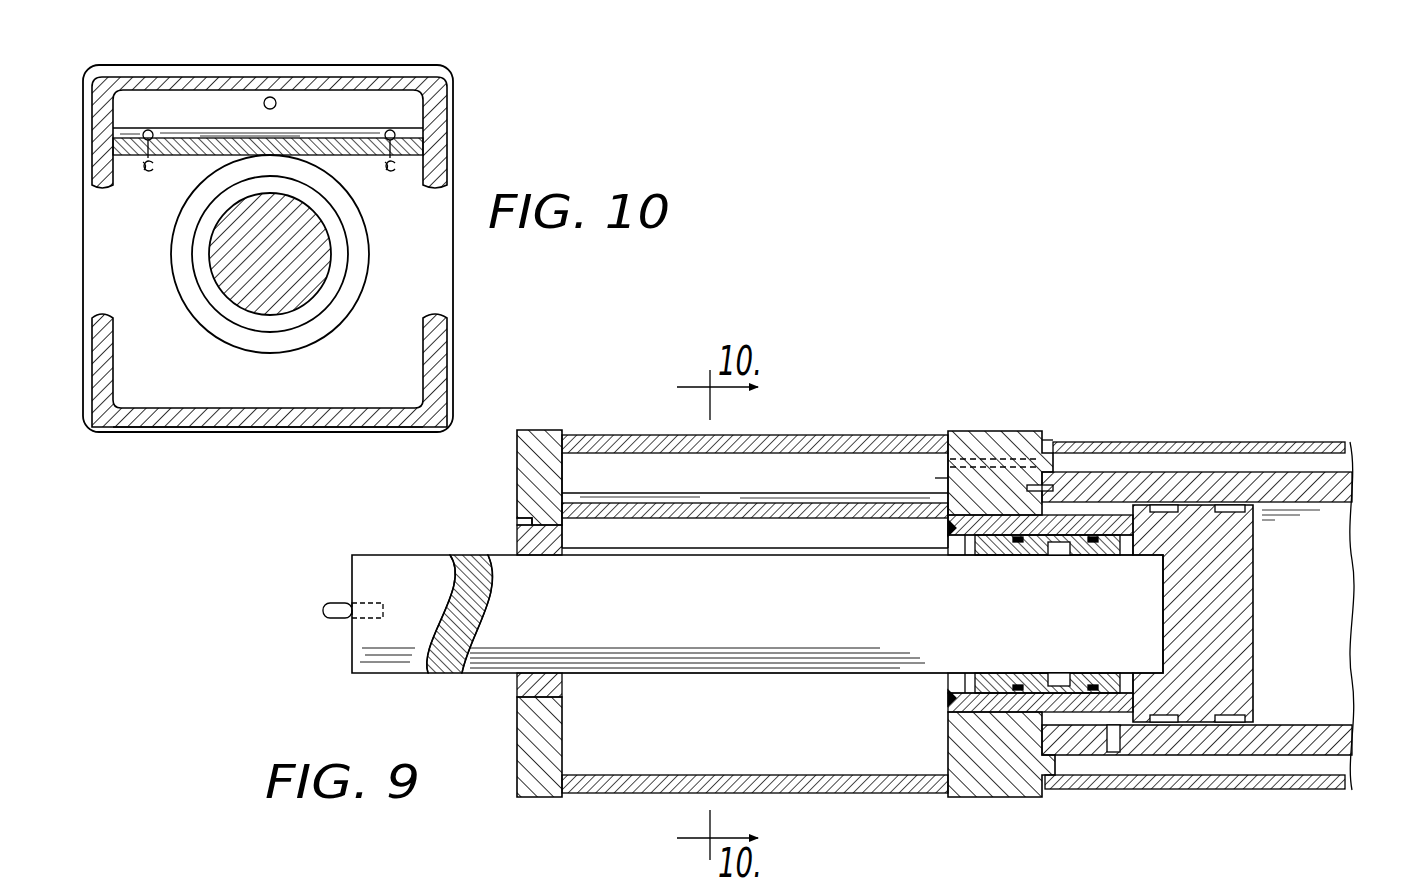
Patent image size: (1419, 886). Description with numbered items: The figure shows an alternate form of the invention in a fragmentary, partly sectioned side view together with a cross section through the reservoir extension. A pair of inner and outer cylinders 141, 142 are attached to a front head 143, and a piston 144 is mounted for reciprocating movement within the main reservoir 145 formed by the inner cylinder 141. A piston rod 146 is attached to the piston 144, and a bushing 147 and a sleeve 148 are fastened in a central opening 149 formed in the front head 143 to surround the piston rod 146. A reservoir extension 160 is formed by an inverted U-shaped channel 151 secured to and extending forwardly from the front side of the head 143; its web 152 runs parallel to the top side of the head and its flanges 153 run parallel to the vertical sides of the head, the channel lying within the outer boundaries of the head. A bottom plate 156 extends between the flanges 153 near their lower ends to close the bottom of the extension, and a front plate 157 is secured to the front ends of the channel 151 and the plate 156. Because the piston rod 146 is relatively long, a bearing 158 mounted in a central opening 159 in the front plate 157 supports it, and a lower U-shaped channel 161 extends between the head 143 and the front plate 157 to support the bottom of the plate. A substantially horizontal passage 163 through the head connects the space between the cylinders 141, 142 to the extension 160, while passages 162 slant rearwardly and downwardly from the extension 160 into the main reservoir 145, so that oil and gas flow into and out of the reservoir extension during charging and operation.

In FIG. 9, the inner cylinder 141 is at (1346, 490).
In FIG. 9, the outer cylinder 142 is at (1295, 442).
In FIG. 9, the front head 143 is at (1000, 433).
In FIG. 9, the piston 144 is at (1251, 565).
In FIG. 9, the main reservoir 145 is at (1328, 658).
In FIG. 10, the piston rod 146 is at (288, 298).
In FIG. 9, the piston rod 146 is at (675, 622).
In FIG. 10, the bushing 147 is at (340, 271).
In FIG. 9, the bushing 147 is at (1034, 556).
In FIG. 10, the sleeve 148 is at (363, 229).
In FIG. 9, the sleeve 148 is at (997, 537).
In FIG. 9, the central opening 149 is at (948, 530).
In FIG. 10, the inverted U-shaped channel 151 is at (201, 72).
In FIG. 9, the inverted U-shaped channel 151 is at (850, 436).
In FIG. 10, the web 152 is at (290, 79).
In FIG. 10, the flanges 153 is at (96, 140).
In FIG. 10, the bottom plate 156 is at (195, 151).
In FIG. 9, the bottom plate 156 is at (746, 498).
In FIG. 9, the front plate 157 is at (535, 430).
In FIG. 9, the bearing 158 is at (518, 523).
In FIG. 9, the central opening 159 is at (550, 535).
In FIG. 10, the reservoir extension 160 is at (360, 119).
In FIG. 9, the reservoir extension 160 is at (650, 496).
In FIG. 10, the lower U-shaped channel 161 is at (264, 428).
In FIG. 9, the lower U-shaped channel 161 is at (651, 796).
In FIG. 10, the passages 162 is at (151, 126).
In FIG. 9, the passages 162 is at (946, 480).
In FIG. 10, the passage 163 is at (275, 108).
In FIG. 9, the passage 163 is at (1060, 434).